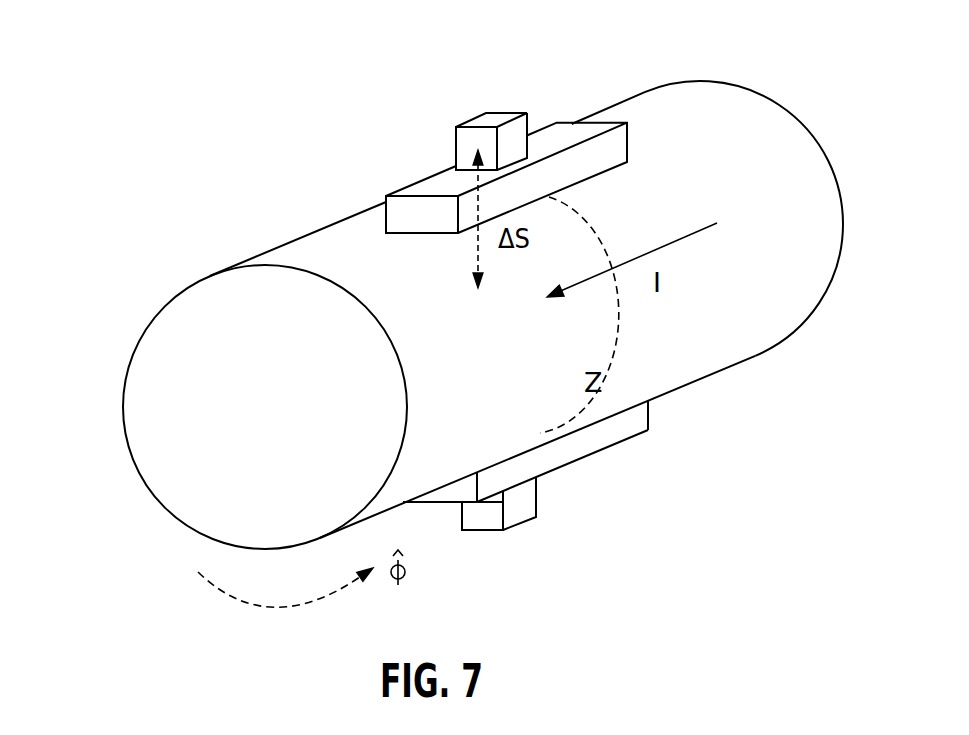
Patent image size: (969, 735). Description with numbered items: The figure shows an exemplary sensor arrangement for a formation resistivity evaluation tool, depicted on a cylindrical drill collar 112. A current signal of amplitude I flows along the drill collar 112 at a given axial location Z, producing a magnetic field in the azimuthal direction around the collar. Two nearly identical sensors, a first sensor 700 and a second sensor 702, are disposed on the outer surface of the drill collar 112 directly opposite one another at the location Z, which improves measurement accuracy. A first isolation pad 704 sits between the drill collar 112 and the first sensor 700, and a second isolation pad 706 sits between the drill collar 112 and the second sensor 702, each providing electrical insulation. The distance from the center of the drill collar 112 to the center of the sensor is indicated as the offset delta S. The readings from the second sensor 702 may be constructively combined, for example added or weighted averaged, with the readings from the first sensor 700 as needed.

The drill collar 112 is at (147, 407).
The first sensor 700 is at (487, 122).
The first isolation pad 704 is at (438, 185).
The second isolation pad 706 is at (587, 445).
The second sensor 702 is at (526, 501).